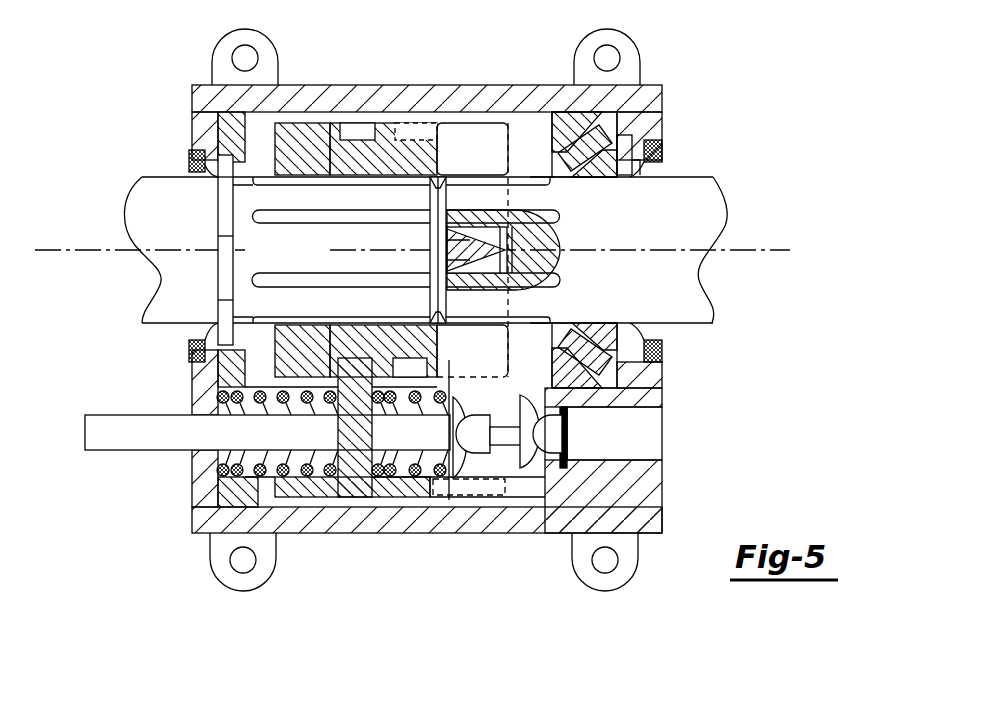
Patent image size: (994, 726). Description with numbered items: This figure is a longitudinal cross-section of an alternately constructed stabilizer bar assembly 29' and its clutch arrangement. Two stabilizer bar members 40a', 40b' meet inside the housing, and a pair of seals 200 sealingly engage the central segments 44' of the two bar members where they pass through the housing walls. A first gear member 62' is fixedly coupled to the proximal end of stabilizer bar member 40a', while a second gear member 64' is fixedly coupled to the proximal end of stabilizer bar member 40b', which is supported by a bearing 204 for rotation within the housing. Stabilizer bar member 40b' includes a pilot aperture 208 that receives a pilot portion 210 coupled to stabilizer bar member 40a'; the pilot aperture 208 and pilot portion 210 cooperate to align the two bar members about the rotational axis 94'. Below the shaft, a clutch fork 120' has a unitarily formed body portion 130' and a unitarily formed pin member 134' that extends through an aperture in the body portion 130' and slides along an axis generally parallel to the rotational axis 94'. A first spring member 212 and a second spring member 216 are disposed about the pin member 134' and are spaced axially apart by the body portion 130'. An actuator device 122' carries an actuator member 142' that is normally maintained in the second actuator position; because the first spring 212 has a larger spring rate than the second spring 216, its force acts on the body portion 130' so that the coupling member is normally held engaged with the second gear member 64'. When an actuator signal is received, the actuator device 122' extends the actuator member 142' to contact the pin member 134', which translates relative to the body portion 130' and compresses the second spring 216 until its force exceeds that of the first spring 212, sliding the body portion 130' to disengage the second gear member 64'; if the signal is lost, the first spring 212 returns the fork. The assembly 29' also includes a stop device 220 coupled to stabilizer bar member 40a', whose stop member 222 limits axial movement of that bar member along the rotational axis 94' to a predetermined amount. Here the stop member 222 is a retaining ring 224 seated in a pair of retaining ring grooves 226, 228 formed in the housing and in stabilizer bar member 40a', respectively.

The stabilizer bar assembly 29' is at (496, 298).
The stabilizer bar member 40a' is at (116, 250).
The stabilizer bar member 40b' is at (518, 250).
The central segment 44' is at (419, 280).
The first gear member 62' is at (405, 250).
The second gear member 64' is at (588, 250).
The rotational axis 94' is at (448, 236).
The clutch fork 120' is at (572, 437).
The actuator device 122' is at (666, 435).
The body portion 130' is at (410, 472).
The pin member 134' is at (248, 406).
The actuator member 142' is at (509, 486).
The seal 200 is at (188, 158).
The bearing 204 is at (552, 122).
The pilot aperture 208 is at (522, 251).
The pilot portion 210 is at (480, 269).
The first spring member 212 is at (215, 462).
The second spring member 216 is at (449, 362).
The stop device 220 is at (209, 196).
The stop member 222 is at (220, 234).
The retaining ring 224 is at (226, 305).
The retaining ring groove 226 is at (236, 148).
The retaining ring groove 228 is at (240, 203).